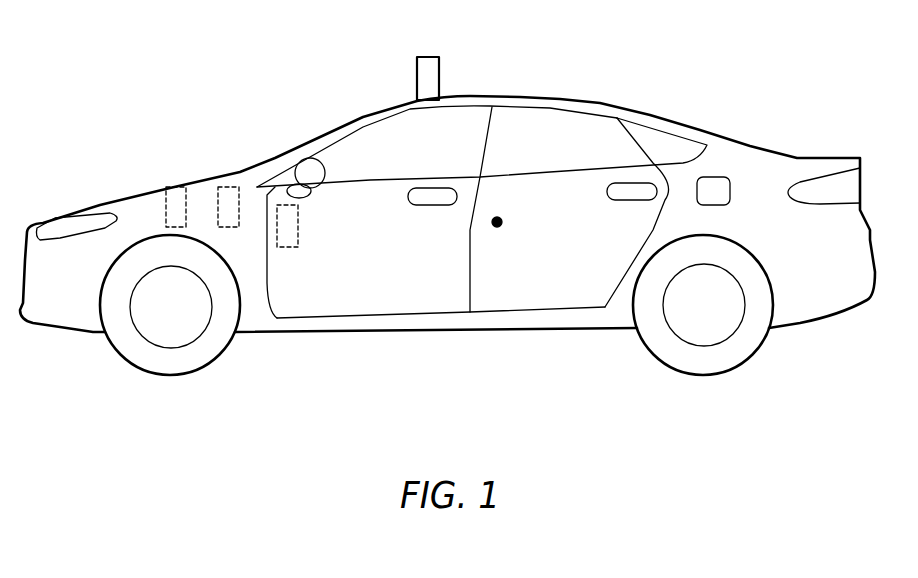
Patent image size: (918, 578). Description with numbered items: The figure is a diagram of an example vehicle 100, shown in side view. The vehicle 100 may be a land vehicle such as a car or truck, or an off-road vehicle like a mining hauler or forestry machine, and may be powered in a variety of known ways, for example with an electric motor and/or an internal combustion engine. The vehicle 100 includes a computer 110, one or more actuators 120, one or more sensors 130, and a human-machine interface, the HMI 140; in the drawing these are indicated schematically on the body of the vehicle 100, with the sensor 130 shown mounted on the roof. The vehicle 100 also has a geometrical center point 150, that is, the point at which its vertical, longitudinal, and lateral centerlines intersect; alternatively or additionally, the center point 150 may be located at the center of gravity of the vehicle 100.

The vehicle 100 is at (518, 97).
The computer 110 is at (228, 182).
The actuator 120 is at (172, 176).
The sensor 130 is at (425, 57).
The human-machine interface 140 is at (283, 205).
The geometrical center point 150 is at (498, 227).